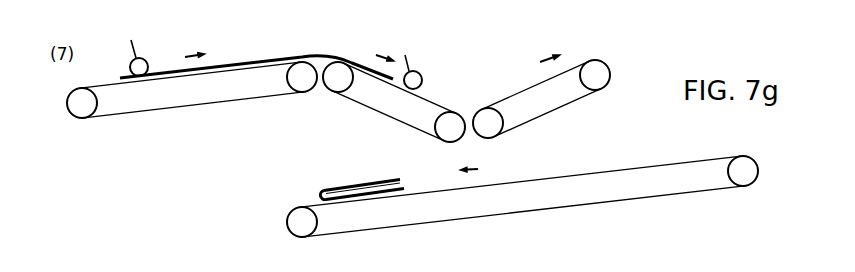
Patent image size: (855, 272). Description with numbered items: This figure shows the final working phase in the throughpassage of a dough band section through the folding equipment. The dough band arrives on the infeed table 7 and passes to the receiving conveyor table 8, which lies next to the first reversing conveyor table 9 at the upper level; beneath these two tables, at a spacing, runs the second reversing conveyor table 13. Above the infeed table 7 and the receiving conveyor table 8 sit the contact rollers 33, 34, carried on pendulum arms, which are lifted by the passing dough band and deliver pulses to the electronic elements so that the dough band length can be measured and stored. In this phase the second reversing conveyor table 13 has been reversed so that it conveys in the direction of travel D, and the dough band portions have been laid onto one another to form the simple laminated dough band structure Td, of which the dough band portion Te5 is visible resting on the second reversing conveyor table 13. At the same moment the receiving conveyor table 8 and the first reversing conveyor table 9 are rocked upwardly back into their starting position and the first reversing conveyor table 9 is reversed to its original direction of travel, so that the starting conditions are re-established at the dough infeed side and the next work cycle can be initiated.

The infeed table 7 is at (208, 92).
The receiving conveyor table 8 is at (380, 100).
The first reversing conveyor table 9 is at (553, 105).
The second reversing conveyor table 13 is at (619, 178).
The contact roller 33 is at (142, 70).
The contact roller 34 is at (416, 80).
The dough band portion Te5 is at (369, 181).
The simple laminated dough band structure Td is at (313, 192).
The direction of travel D is at (457, 179).